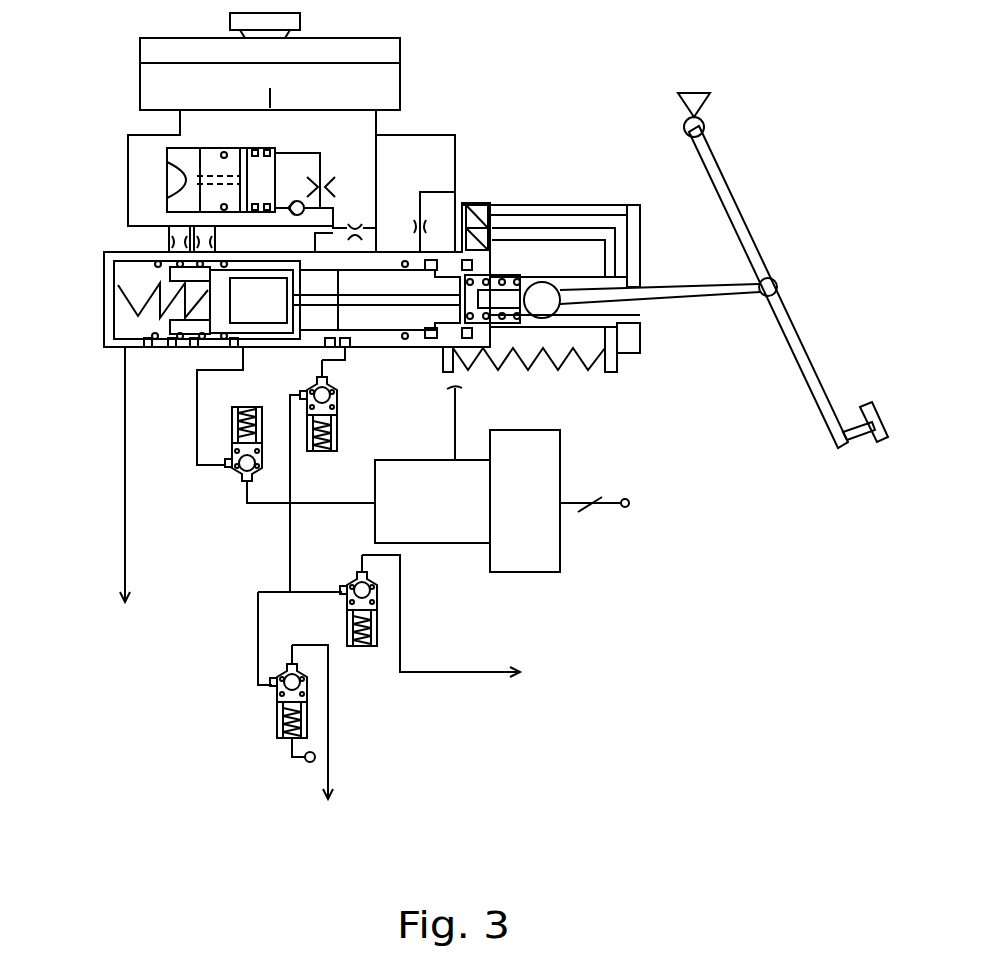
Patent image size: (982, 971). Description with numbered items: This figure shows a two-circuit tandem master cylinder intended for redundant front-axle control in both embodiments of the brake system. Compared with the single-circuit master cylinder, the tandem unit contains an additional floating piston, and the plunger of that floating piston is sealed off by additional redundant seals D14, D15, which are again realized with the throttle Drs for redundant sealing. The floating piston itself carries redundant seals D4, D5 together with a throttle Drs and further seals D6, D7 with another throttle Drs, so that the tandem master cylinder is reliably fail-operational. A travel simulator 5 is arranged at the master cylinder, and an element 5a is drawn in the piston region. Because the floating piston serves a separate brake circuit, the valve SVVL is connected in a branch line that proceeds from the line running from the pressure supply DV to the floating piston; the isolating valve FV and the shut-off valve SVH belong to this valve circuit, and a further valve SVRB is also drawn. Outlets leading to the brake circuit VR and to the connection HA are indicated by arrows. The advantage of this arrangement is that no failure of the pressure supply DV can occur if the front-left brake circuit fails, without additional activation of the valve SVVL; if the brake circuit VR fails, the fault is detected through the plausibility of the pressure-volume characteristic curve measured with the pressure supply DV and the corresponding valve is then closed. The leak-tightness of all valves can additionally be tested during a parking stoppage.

The travel simulator 5 is at (268, 178).
The throttle for redundant seal Drs is at (412, 222).
The piston with return spring 5a is at (218, 306).
The seal D7 is at (147, 332).
The seal D6 is at (173, 336).
The seal D5 is at (195, 338).
The seal D4 is at (228, 342).
The seal D14 is at (343, 338).
The seal D15 is at (330, 340).
The pressure supply DV is at (547, 463).
The valve SVVL is at (235, 472).
The isolating valve FV is at (338, 455).
The shut-off valve SVH is at (360, 645).
The solenoid valve RB SVRB is at (290, 740).
The brake circuit VR is at (244, 588).
The rear axle brake circuit HA is at (536, 670).